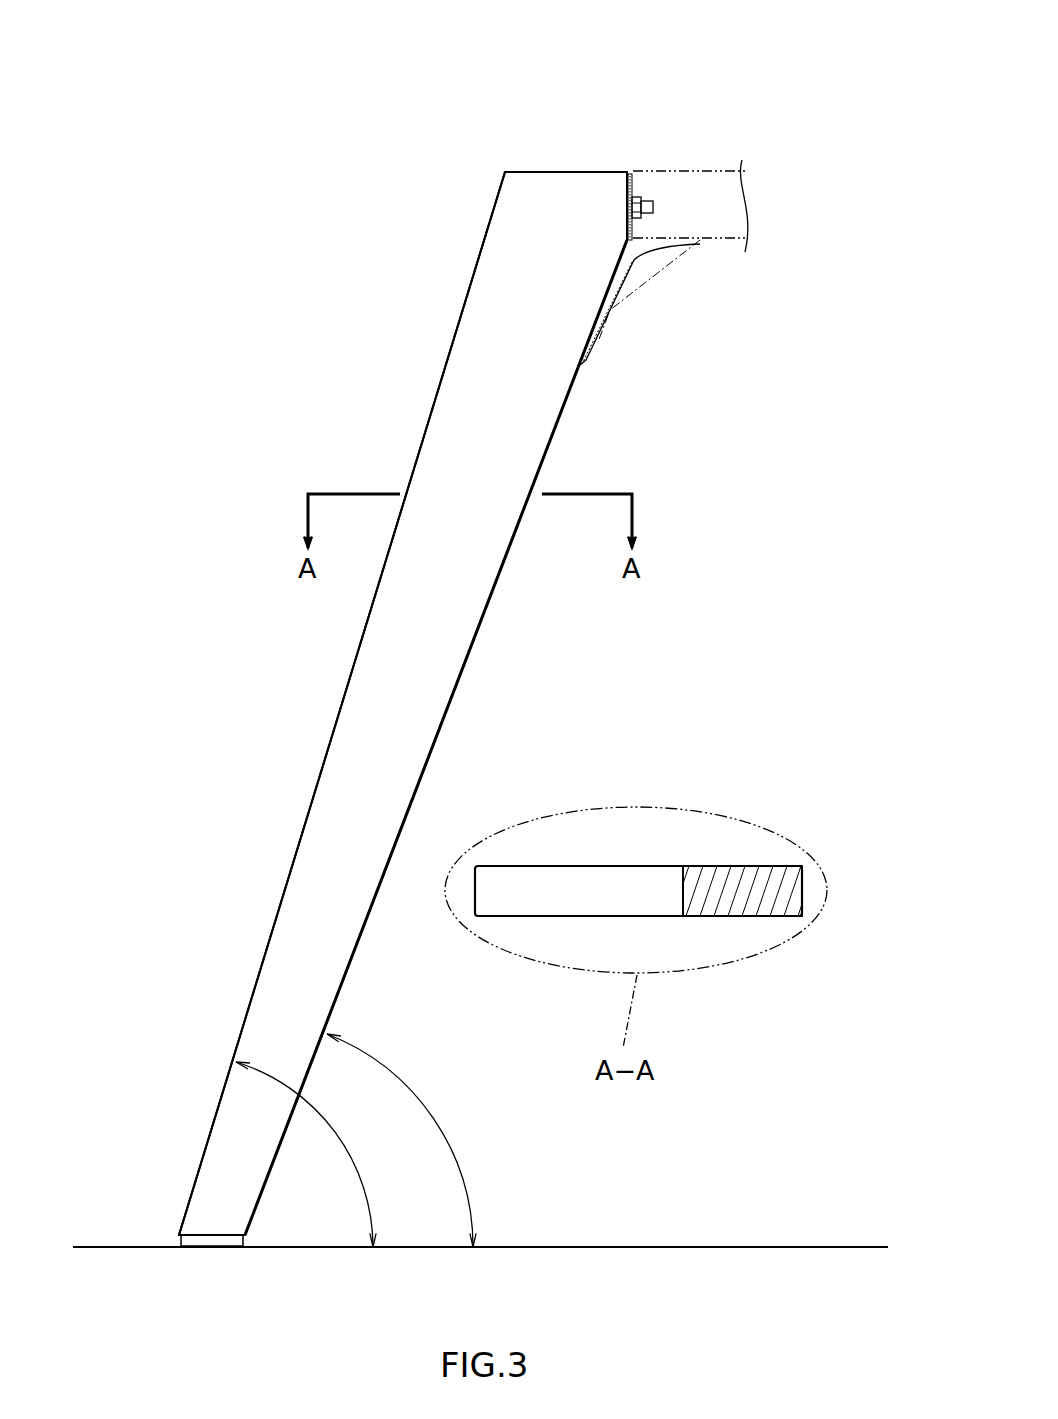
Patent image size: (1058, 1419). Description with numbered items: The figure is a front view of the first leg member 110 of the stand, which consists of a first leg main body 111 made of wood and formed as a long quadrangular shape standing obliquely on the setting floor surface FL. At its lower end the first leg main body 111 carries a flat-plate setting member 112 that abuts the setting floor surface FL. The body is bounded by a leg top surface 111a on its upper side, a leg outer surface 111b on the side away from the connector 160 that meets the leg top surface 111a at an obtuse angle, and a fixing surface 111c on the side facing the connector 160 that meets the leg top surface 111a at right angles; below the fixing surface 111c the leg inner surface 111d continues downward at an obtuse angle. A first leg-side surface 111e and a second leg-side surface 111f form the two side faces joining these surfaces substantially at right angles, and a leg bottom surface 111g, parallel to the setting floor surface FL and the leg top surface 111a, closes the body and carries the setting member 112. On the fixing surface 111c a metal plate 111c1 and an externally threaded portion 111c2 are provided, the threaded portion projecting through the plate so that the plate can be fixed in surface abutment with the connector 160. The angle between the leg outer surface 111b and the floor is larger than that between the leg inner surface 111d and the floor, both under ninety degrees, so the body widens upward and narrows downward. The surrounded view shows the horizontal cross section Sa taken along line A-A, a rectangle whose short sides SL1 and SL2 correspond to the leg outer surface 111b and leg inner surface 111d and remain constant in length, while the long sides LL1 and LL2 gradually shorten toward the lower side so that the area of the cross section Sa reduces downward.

The first leg member 110 is at (330, 217).
The first leg main body 111 is at (431, 414).
The leg top surface 111a is at (552, 172).
The leg outer surface 111b is at (446, 362).
The fixing surface 111c is at (632, 185).
The metal plate 111c1 is at (632, 228).
The externally threaded portion 111c2 is at (654, 207).
The leg inner surface 111d is at (564, 407).
The first leg-side surface 111e is at (456, 585).
The second leg-side surface 111f is at (582, 865).
The leg bottom surface 111g is at (214, 1238).
The setting member 112 is at (180, 1240).
The connector 160 is at (667, 163).
The setting floor surface FL is at (700, 1246).
The horizontal cross section Sa is at (708, 878).
The long side of cross section LL1 is at (720, 917).
The long side of cross section LL2 is at (777, 867).
The short side of cross section SL1 is at (683, 888).
The short side of cross section SL2 is at (803, 890).